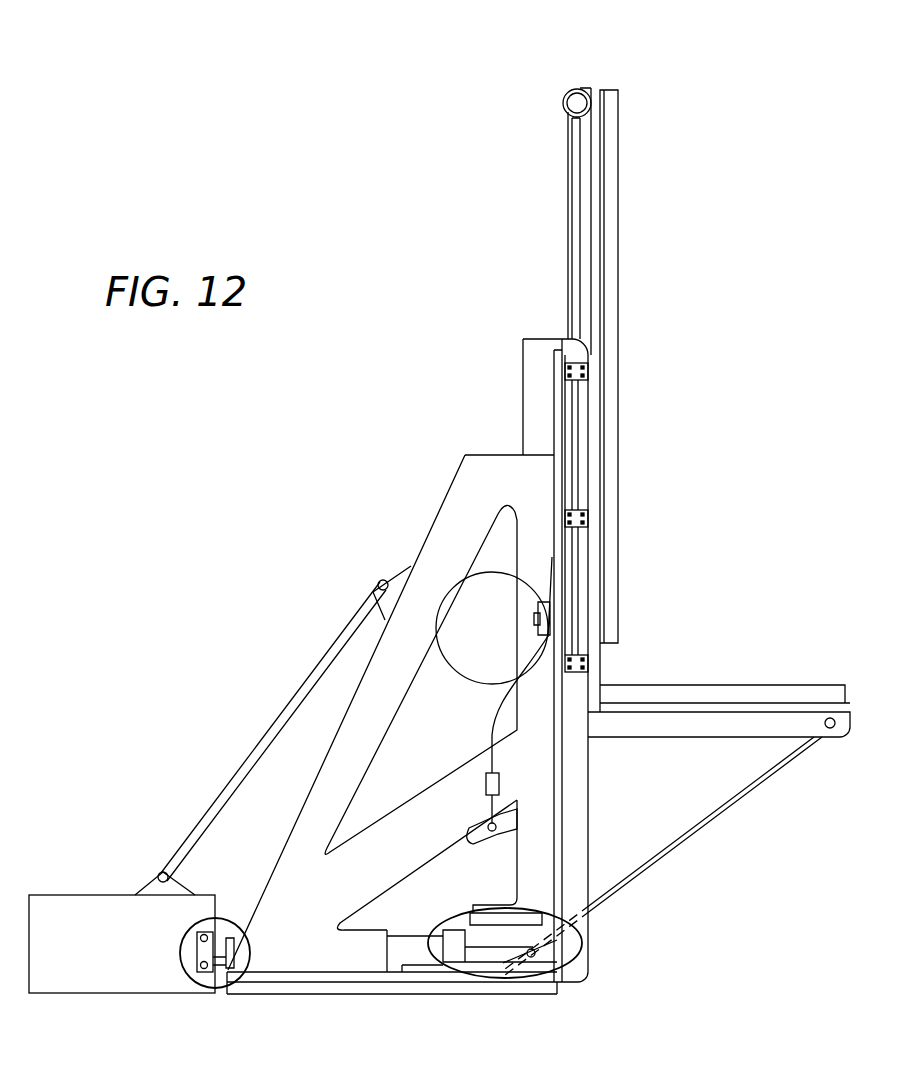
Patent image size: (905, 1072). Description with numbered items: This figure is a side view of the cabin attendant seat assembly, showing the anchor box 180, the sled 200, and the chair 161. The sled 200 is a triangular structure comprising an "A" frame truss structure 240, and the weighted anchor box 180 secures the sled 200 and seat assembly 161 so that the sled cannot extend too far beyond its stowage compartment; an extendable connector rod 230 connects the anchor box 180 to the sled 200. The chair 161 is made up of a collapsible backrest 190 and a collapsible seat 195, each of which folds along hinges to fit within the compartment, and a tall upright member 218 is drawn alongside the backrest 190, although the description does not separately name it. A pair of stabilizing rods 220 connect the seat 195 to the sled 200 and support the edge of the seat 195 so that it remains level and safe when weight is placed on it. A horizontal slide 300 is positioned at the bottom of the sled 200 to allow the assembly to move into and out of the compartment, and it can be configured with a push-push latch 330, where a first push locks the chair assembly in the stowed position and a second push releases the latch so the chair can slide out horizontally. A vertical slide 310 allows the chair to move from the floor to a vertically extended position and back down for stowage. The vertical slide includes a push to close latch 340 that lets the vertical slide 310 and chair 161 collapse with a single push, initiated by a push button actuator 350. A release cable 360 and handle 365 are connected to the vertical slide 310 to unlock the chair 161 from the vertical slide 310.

The cabin attendant seat 161 is at (672, 720).
The anchor box 180 is at (92, 893).
The backrest 190 is at (588, 182).
The seat 195 is at (733, 728).
The sled 200 is at (278, 942).
The vertical post 218 is at (617, 183).
The stabilizing rods 220 is at (675, 845).
The extendable connector rod 230 is at (218, 795).
The "A" frame truss structure 240 is at (432, 557).
The horizontal slide 300 is at (485, 997).
The vertical slide 310 is at (572, 252).
The push-push latch 330 is at (213, 988).
The push to close latch 340 is at (583, 936).
The push button actuator 350 is at (577, 89).
The release cable 360 is at (463, 683).
The handle 365 is at (492, 835).